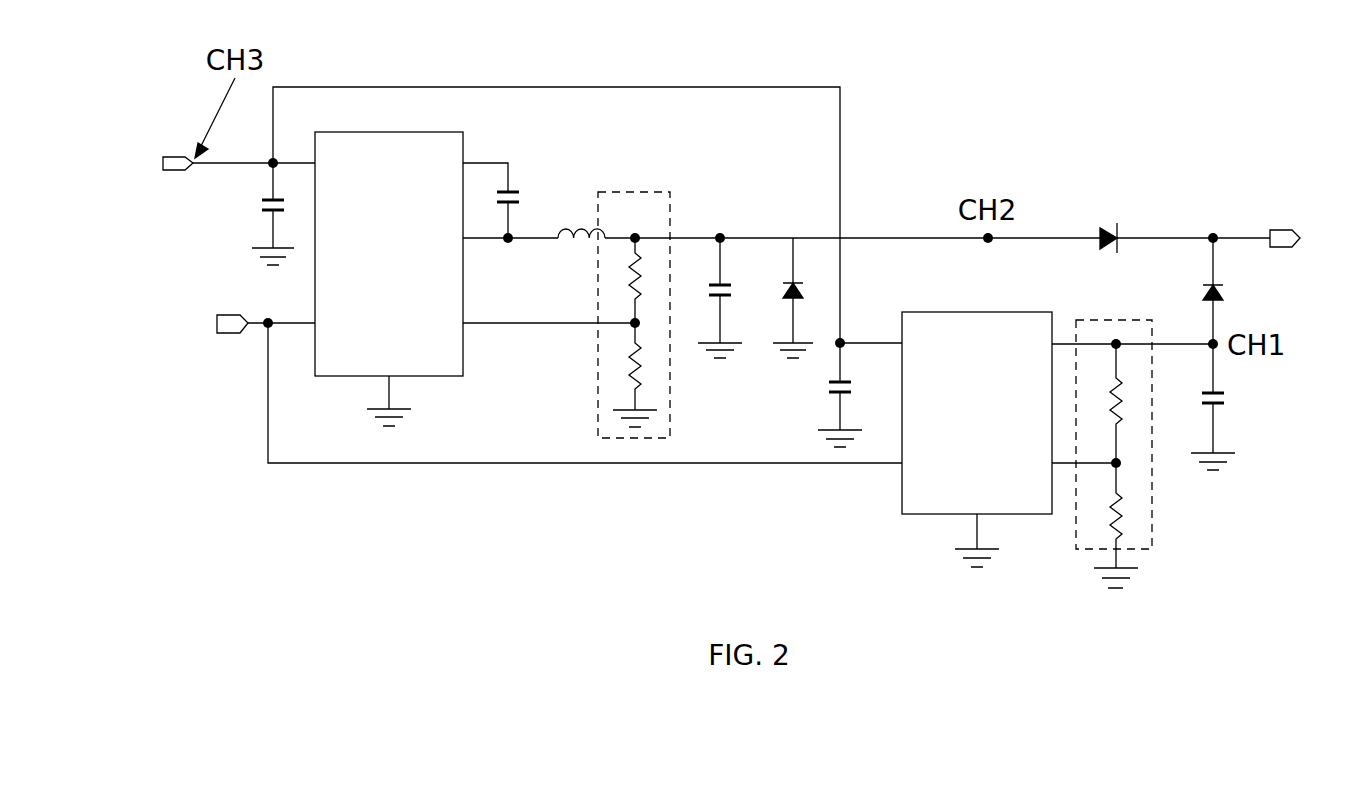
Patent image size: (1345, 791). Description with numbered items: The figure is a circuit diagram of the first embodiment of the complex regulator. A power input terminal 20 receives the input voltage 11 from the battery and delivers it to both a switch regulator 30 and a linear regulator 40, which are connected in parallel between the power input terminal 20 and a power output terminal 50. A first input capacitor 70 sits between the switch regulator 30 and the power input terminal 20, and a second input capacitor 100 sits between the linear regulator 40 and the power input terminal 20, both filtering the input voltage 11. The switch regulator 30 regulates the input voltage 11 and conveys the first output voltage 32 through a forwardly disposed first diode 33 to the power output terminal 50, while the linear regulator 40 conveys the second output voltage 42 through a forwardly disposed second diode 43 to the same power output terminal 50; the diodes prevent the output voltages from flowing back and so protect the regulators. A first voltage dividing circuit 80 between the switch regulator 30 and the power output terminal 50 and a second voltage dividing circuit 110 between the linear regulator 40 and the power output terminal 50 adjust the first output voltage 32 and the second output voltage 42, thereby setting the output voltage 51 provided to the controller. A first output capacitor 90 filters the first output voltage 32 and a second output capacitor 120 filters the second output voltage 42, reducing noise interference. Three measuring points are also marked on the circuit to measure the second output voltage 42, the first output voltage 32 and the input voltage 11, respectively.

The power input terminal 20 is at (176, 157).
The input voltage 11 is at (278, 158).
The switch regulator 30 is at (381, 131).
The first input capacitor 70 is at (262, 200).
The first voltage dividing circuit 80 is at (633, 192).
The first output capacitor 90 is at (733, 282).
The linear regulator 40 is at (921, 325).
The second input capacitor 100 is at (828, 382).
The second voltage dividing circuit 110 is at (1152, 540).
The first output voltage 32 is at (1052, 238).
The first diode 33 is at (1103, 232).
The output voltage 51 is at (1210, 236).
The power output terminal 50 is at (1278, 230).
The second diode 43 is at (1223, 287).
The second output voltage 42 is at (1218, 347).
The second output capacitor 120 is at (1223, 398).